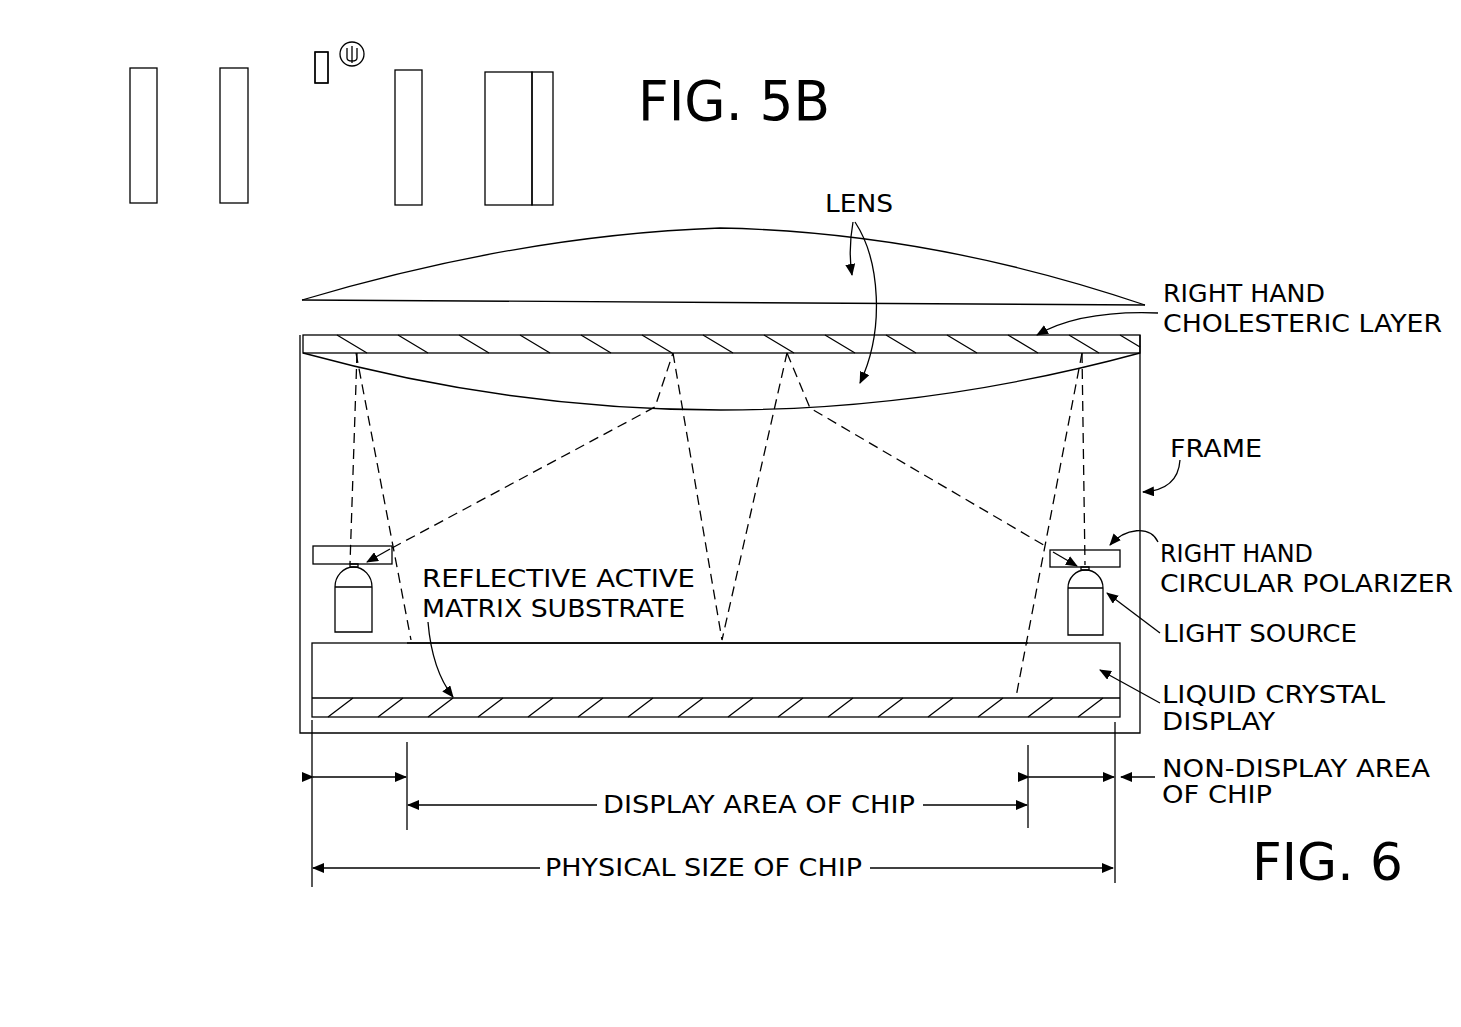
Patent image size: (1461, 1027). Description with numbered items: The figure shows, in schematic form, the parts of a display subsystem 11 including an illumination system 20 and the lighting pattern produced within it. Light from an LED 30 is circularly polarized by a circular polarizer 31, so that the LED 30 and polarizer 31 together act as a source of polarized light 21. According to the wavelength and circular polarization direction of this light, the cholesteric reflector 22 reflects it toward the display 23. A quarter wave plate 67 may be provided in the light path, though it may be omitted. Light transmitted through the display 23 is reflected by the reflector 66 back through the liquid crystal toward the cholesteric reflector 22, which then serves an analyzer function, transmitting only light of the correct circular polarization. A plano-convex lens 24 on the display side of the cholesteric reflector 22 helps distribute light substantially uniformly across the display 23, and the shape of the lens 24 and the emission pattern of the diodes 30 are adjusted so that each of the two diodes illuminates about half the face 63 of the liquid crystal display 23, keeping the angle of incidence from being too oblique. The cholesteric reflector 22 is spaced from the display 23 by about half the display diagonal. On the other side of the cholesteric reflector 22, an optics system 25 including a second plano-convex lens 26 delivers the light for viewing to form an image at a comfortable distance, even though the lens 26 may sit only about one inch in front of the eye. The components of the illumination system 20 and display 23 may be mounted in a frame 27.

In FIG. 5B, the display subsystem 11 is at (484, 60).
In FIG. 6, the display subsystem 11 is at (1155, 280).
In FIG. 5B, the illumination system 20 is at (285, 62).
In FIG. 6, the illumination system 20 is at (1118, 417).
In FIG. 5B, the source of polarized light 21 is at (308, 62).
In FIG. 6, the source of polarized light 21 is at (406, 521).
In FIG. 5B, the cholesteric reflector 22 is at (228, 68).
In FIG. 6, the cholesteric reflector 22 is at (1097, 340).
In FIG. 5B, the display 23 is at (512, 207).
In FIG. 6, the display 23 is at (985, 642).
In FIG. 6, the lens 24 is at (957, 392).
In FIG. 5B, the optics system 25 is at (196, 57).
In FIG. 6, the optics system 25 is at (1075, 262).
In FIG. 5B, the lens 26 is at (137, 68).
In FIG. 6, the lens 26 is at (913, 242).
In FIG. 6, the frame 27 is at (298, 497).
In FIG. 5B, the LED 30 is at (365, 52).
In FIG. 6, the LED 30 is at (334, 607).
In FIG. 5B, the circular polarizer 31 is at (330, 52).
In FIG. 6, the circular polarizer 31 is at (332, 546).
In FIG. 6, the face 63 is at (892, 632).
In FIG. 5B, the reflector 66 is at (553, 205).
In FIG. 6, the reflector 66 is at (1067, 690).
In FIG. 5B, the quarter wave plate 67 is at (412, 70).